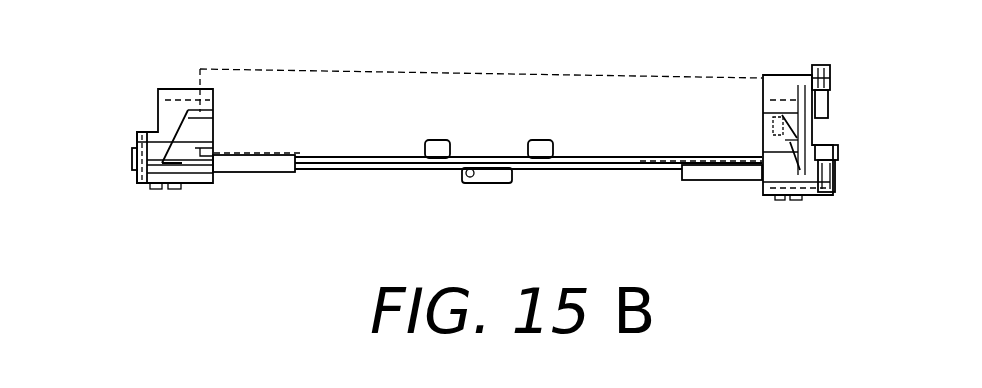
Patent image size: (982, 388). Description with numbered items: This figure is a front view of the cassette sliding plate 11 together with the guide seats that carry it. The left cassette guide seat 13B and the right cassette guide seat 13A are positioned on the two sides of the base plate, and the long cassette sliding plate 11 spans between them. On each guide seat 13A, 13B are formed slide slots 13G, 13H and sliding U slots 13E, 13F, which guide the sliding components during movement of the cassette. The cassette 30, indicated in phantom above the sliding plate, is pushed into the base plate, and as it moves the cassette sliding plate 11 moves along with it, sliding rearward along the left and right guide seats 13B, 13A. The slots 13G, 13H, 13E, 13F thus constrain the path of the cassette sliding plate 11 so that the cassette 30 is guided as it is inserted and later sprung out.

The cassette sliding plate 11 is at (563, 180).
The cassette 30 is at (556, 92).
The right cassette guide seat 13A is at (828, 106).
The left cassette guide seat 13B is at (158, 115).
The sliding "U" slot 13E is at (808, 178).
The sliding "U" slot 13F is at (133, 164).
The slide slot 13G is at (805, 145).
The slide slot 13H is at (140, 135).